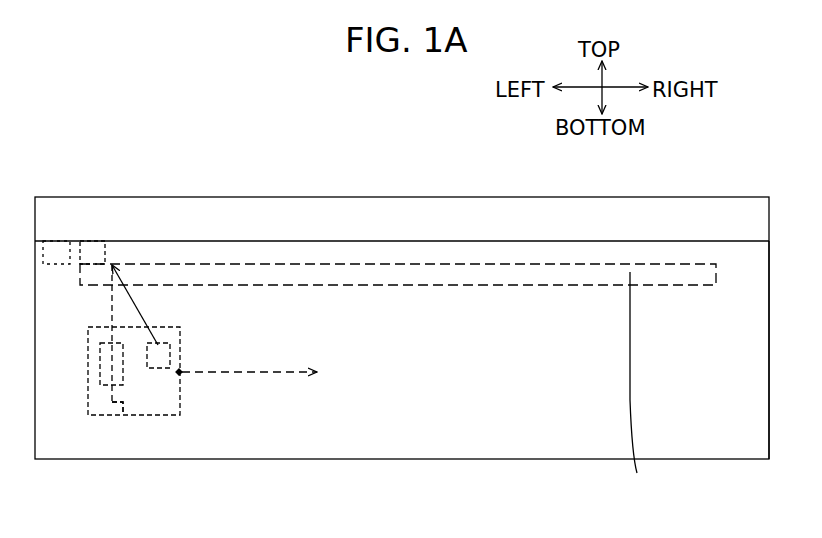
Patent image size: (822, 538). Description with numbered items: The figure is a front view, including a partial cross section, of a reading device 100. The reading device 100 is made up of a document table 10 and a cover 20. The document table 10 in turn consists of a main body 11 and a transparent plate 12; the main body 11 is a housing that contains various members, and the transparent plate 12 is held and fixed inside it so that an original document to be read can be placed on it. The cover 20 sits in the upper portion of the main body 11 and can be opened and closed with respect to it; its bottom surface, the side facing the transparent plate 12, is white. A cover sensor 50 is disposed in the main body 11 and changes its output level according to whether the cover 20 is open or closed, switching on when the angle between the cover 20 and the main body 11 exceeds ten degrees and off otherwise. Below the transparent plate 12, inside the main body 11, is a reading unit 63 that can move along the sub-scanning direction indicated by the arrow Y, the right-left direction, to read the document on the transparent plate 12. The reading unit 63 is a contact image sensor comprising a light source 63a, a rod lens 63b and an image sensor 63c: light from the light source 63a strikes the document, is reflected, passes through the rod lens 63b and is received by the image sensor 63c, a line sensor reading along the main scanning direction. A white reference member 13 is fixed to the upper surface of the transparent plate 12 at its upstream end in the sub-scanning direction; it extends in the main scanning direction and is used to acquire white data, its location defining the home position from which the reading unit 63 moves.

The reading device 100 is at (400, 181).
The document table 10 is at (790, 497).
The main body 11 is at (769, 433).
The transparent plate 12 is at (639, 386).
The cover 20 is at (683, 220).
The cover sensor 50 is at (58, 242).
The reference member 13 is at (111, 250).
The reading unit 63 is at (80, 352).
The light source 63a is at (158, 357).
The rod lens 63b is at (106, 360).
The image sensor 63c is at (122, 410).